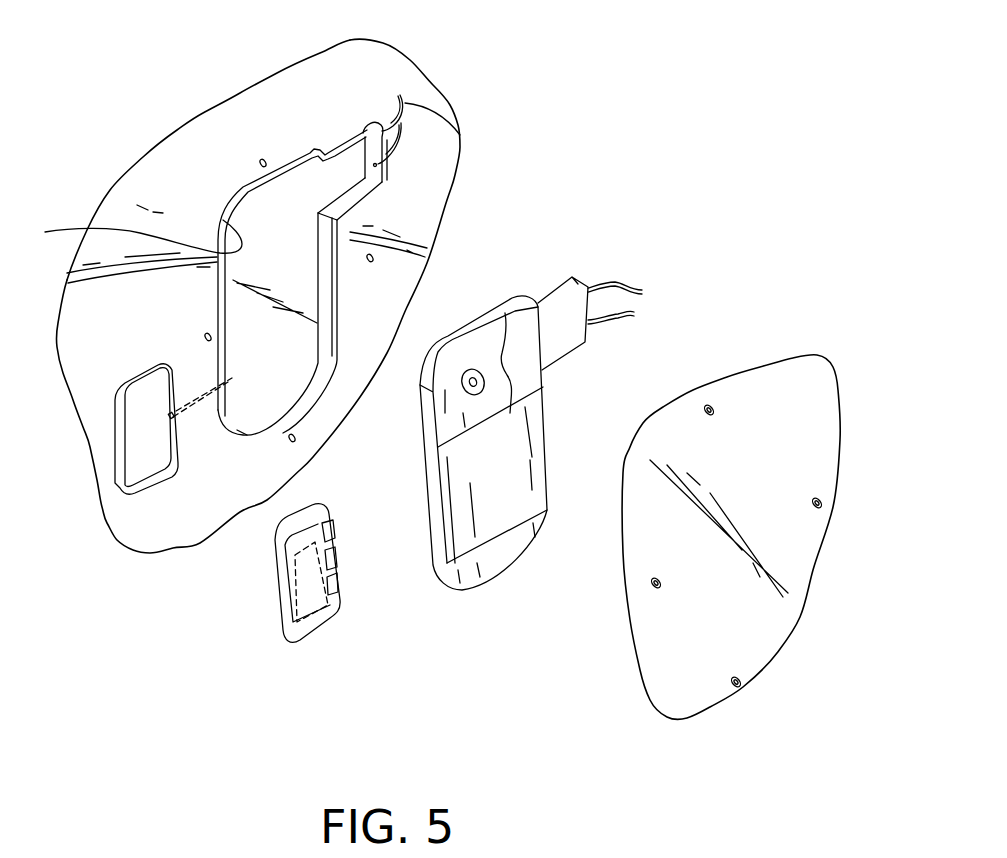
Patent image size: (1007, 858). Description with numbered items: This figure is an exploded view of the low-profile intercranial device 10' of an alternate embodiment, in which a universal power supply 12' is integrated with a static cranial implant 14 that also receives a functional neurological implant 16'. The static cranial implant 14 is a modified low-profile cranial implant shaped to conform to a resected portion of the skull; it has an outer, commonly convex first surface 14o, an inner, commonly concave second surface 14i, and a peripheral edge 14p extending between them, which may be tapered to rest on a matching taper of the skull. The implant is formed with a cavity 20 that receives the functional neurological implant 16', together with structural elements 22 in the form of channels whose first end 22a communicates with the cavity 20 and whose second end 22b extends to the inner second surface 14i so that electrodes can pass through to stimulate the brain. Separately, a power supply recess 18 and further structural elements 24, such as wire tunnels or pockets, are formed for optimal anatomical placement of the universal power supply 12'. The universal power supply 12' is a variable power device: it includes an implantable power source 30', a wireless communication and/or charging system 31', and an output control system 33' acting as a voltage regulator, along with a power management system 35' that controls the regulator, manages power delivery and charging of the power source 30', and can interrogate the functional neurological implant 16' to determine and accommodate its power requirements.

The low-profile intercranial device 10' is at (681, 90).
The universal power supply 12' is at (343, 583).
The static cranial implant 14 is at (270, 100).
The inner second surface 14i is at (133, 203).
The outer first surface 14o is at (413, 80).
The peripheral edge 14p is at (203, 117).
The functional neurological implant 16' is at (531, 433).
The power supply recess 18 is at (137, 465).
The cavity 20 is at (125, 236).
The structural elements 22 is at (407, 137).
The first end 22a is at (370, 126).
The second end 22b is at (399, 95).
The structural elements 24 is at (216, 390).
The implantable power source 30' is at (318, 622).
The wireless communication and/or charging system 31' is at (367, 542).
The output control system 33' is at (351, 505).
The power management system 35' is at (370, 591).